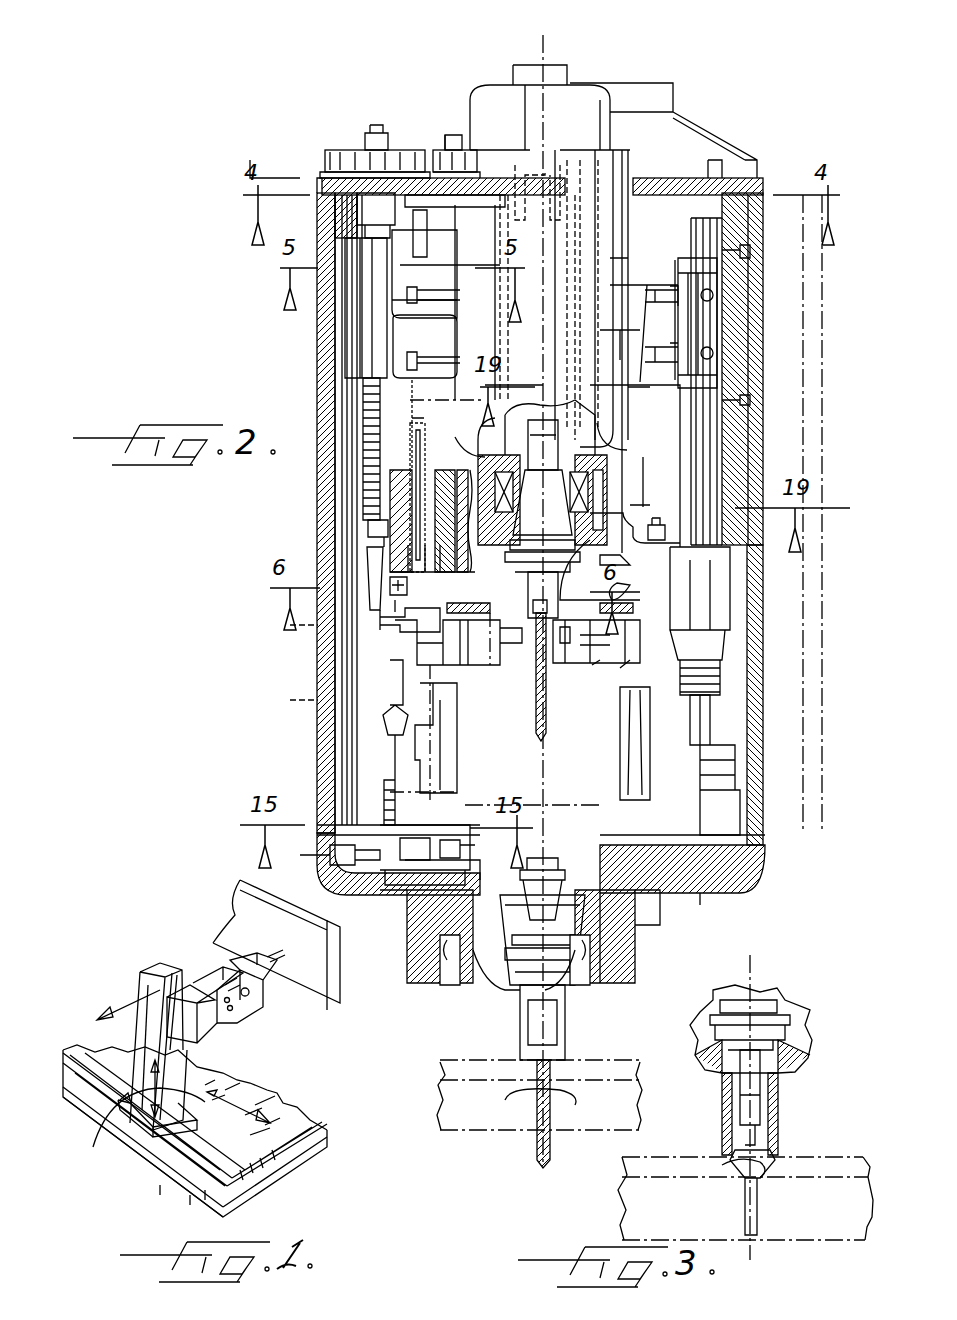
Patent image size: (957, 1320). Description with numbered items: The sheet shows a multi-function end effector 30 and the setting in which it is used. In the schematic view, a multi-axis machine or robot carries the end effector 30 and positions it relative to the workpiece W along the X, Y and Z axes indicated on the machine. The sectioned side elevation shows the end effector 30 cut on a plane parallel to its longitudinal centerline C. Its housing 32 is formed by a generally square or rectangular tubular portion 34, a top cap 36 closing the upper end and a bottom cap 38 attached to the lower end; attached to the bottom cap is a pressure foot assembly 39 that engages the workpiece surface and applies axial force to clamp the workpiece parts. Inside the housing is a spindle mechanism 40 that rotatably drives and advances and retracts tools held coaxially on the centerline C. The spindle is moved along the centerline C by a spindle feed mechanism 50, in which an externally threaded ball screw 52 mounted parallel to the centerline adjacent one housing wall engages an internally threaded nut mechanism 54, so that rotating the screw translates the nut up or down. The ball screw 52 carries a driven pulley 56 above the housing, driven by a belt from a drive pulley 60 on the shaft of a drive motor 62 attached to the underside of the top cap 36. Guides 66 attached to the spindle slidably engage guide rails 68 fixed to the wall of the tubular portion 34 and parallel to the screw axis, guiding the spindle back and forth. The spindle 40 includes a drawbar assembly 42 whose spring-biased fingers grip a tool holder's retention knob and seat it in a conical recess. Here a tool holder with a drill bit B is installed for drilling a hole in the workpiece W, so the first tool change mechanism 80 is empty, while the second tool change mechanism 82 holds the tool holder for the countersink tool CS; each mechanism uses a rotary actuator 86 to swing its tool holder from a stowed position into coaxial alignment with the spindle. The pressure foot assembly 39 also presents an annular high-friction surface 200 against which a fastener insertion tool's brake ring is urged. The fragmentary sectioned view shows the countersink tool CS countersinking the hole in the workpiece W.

In FIG. 2, the end effector 30 is at (308, 45).
In FIG. 1, the end effector 30 is at (260, 1000).
In FIG. 2, the housing 32 is at (310, 356).
In FIG. 2, the tubular portion 34 is at (328, 395).
In FIG. 2, the top cap 36 is at (732, 185).
In FIG. 2, the bottom cap 38 is at (743, 882).
In FIG. 2, the pressure foot assembly 39 is at (478, 995).
In FIG. 3, the pressure foot assembly 39 is at (800, 1102).
In FIG. 2, the spindle mechanism 40 is at (630, 236).
In FIG. 2, the drawbar assembly 42 is at (635, 470).
In FIG. 2, the spindle feed mechanism 50 is at (318, 148).
In FIG. 2, the ball screw 52 is at (365, 452).
In FIG. 2, the nut mechanism 54 is at (345, 312).
In FIG. 2, the driven pulley 56 is at (372, 133).
In FIG. 2, the drive pulley 60 is at (472, 150).
In FIG. 2, the drive motor 62 is at (472, 220).
In FIG. 2, the guides 66 is at (708, 325).
In FIG. 2, the guide rails 68 is at (340, 696).
In FIG. 2, the first tool change mechanism 80 is at (597, 672).
In FIG. 2, the second tool change mechanism 82 is at (487, 672).
In FIG. 2, the rotary actuator 86 is at (485, 587).
In FIG. 2, the annular high-friction surface 200 is at (600, 937).
In FIG. 2, the drill bit B is at (543, 742).
In FIG. 2, the longitudinal centerline C is at (545, 48).
In FIG. 2, the countersink tool CS is at (383, 720).
In FIG. 3, the countersink tool CS is at (760, 1190).
In FIG. 2, the workpiece W is at (440, 1095).
In FIG. 1, the workpiece W is at (243, 922).
In FIG. 3, the workpiece W is at (630, 1200).
In FIG. 1, the X axis X is at (258, 1095).
In FIG. 1, the Y axis Y is at (142, 1131).
In FIG. 1, the Z axis Z is at (113, 1007).